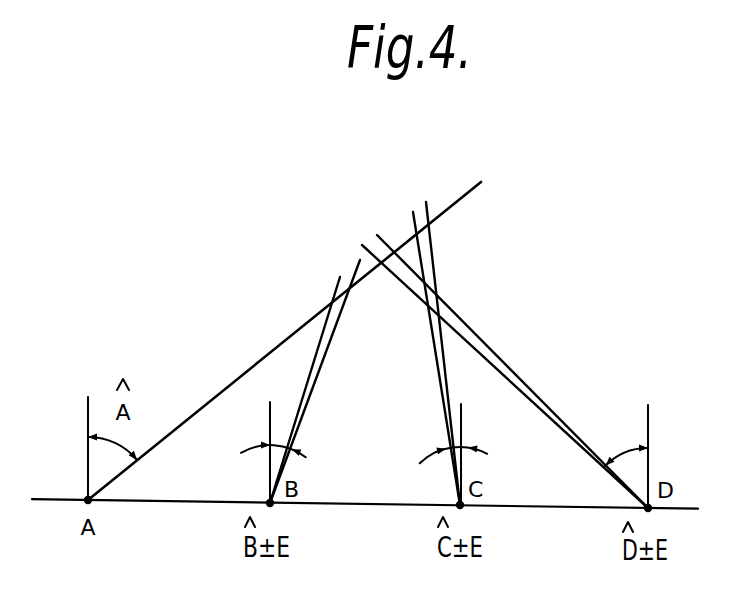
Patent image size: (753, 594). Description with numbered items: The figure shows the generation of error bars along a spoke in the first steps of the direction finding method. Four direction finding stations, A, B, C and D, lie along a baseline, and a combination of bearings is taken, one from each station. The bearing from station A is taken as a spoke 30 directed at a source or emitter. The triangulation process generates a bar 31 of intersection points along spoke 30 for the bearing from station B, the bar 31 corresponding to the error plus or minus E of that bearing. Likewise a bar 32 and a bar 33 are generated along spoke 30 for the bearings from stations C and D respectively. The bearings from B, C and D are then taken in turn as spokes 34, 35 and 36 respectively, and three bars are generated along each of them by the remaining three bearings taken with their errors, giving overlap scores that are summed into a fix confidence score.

The spoke 30 is at (228, 388).
The bar 31 is at (346, 289).
The bar 32 is at (387, 248).
The bar 33 is at (420, 214).
The spoke 34 is at (321, 390).
The spoke 35 is at (416, 353).
The spoke 36 is at (505, 376).